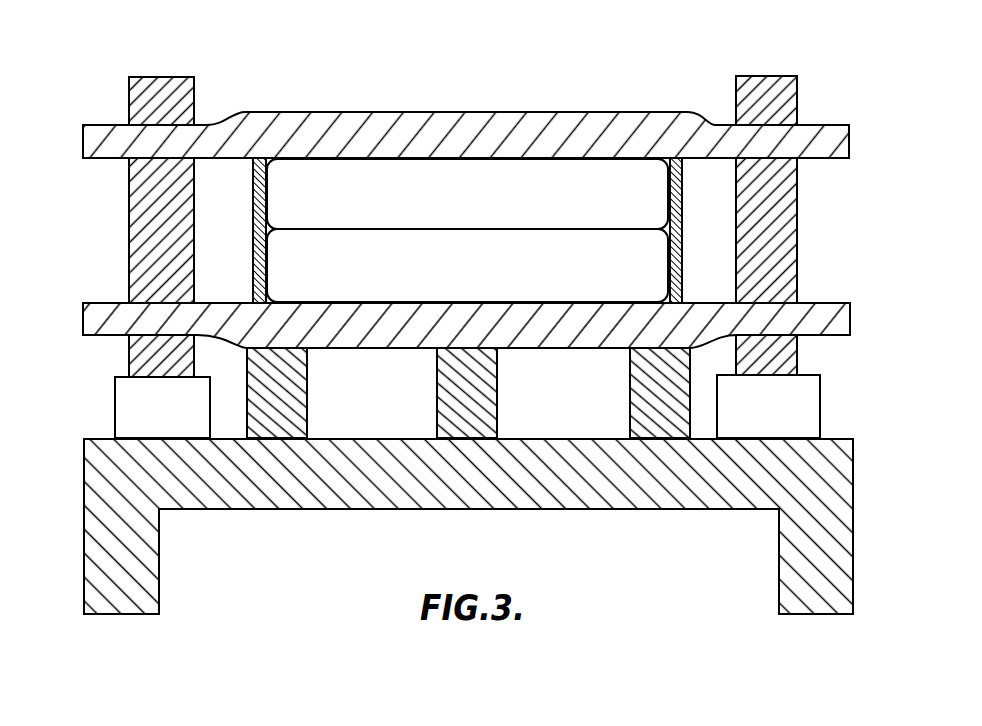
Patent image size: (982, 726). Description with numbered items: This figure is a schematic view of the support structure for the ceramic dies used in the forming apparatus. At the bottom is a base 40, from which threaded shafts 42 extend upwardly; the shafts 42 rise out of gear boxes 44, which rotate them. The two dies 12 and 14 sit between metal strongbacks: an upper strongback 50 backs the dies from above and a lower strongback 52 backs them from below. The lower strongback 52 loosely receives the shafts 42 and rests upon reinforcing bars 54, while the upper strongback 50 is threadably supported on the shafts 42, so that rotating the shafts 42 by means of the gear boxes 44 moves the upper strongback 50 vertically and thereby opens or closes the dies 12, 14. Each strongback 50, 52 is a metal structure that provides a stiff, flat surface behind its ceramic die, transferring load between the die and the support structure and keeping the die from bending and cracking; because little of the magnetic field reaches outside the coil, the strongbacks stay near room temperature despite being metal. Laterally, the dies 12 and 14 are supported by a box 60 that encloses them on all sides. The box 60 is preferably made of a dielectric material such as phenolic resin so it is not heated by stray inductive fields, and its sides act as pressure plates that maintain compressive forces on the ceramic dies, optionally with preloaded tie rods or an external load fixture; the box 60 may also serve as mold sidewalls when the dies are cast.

The die 12 is at (473, 208).
The die 14 is at (473, 276).
The base 40 is at (100, 534).
The threaded shaft 42 is at (142, 230).
The gear box 44 is at (125, 405).
The upper strongback 50 is at (467, 116).
The strongback 52 is at (404, 338).
The reinforcing bar 54 is at (307, 400).
The box 60 is at (258, 230).